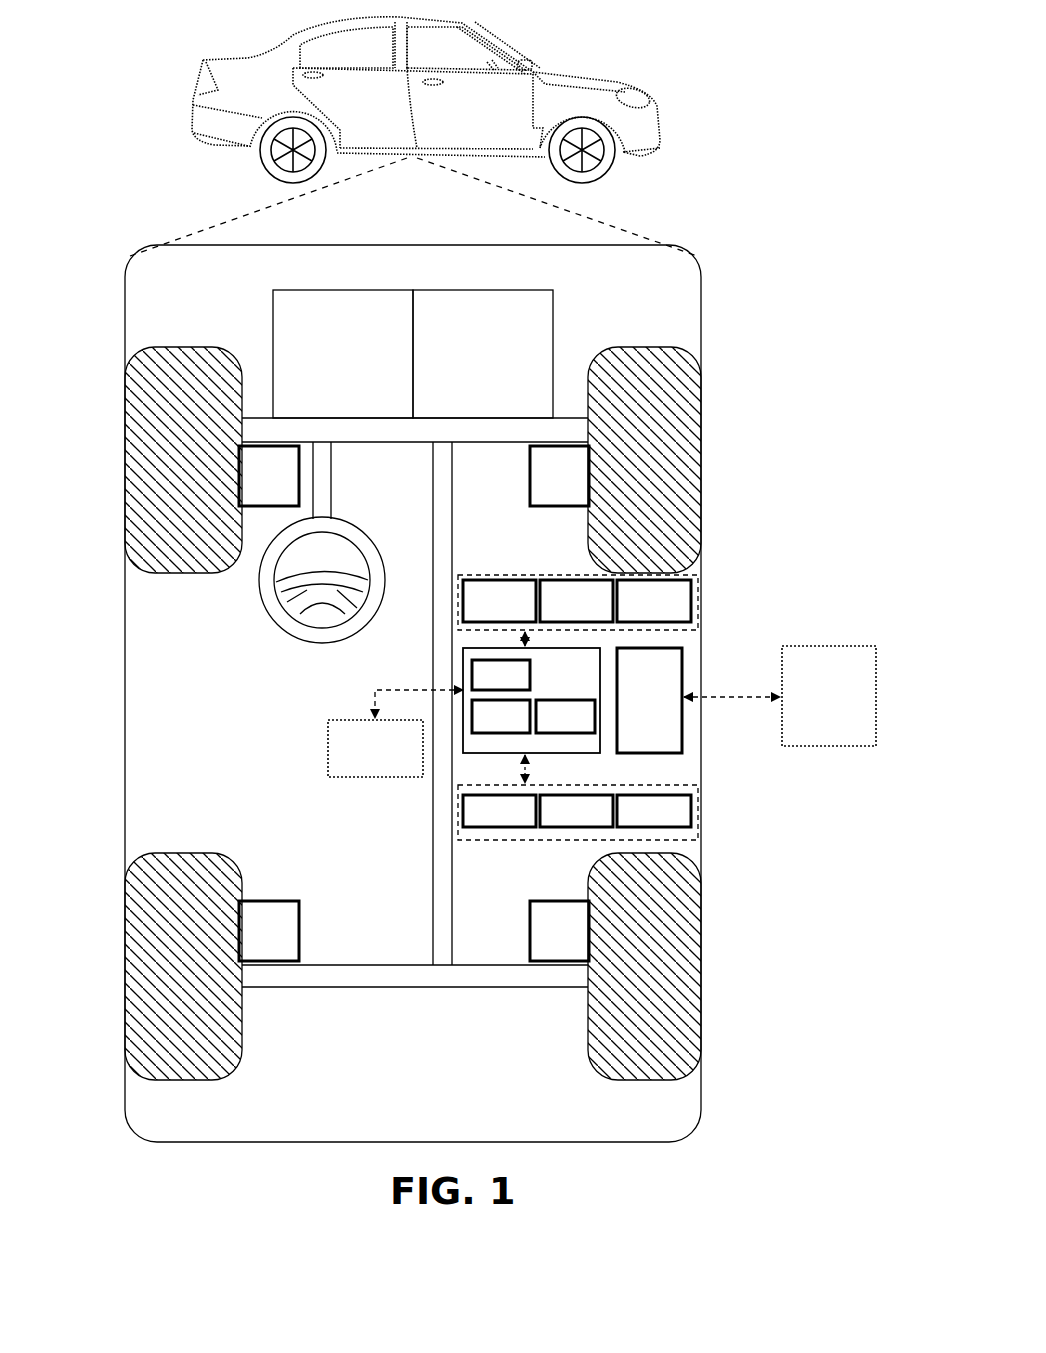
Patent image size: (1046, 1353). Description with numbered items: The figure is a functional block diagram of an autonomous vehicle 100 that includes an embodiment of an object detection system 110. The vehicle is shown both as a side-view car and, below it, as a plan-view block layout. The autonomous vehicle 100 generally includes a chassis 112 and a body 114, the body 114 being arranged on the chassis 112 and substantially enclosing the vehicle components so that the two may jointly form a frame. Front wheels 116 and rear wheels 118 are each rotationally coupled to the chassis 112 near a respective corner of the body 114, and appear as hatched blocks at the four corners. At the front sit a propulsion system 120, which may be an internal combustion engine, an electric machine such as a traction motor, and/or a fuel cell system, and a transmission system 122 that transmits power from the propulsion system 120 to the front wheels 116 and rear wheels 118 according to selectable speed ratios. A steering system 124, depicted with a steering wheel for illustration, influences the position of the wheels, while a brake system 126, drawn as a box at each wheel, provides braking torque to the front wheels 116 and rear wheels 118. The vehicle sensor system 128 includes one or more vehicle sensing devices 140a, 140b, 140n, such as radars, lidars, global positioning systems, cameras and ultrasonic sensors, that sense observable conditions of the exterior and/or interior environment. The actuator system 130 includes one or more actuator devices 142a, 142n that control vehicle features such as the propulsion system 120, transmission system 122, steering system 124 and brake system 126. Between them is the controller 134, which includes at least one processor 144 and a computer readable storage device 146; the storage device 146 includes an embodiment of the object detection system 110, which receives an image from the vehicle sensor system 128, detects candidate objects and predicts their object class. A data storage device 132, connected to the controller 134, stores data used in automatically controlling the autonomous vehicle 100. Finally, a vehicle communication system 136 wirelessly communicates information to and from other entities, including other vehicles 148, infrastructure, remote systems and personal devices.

The autonomous vehicle 100 is at (197, 86).
The object detection system 110 is at (485, 685).
The chassis 112 is at (430, 828).
The body 114 is at (120, 660).
The front wheels 116 is at (180, 345).
The rear wheels 118 is at (182, 1082).
The propulsion system 120 is at (322, 364).
The transmission system 122 is at (460, 364).
The steering system 124 is at (345, 504).
The brake system 126 is at (253, 485).
The vehicle sensor system 128 is at (538, 573).
The actuator system 130 is at (540, 843).
The data storage device 132 is at (359, 758).
The controller 134 is at (549, 687).
The vehicle communication system 136 is at (634, 710).
The vehicle sensing device 140a is at (479, 611).
The vehicle sensing device 140b is at (556, 611).
The vehicle sensing device 140n is at (633, 611).
The actuator device 142a is at (479, 821).
The actuator device 142n is at (633, 821).
The processor 144 is at (485, 727).
The computer readable storage device 146 is at (549, 727).
The other vehicles 148 is at (813, 706).